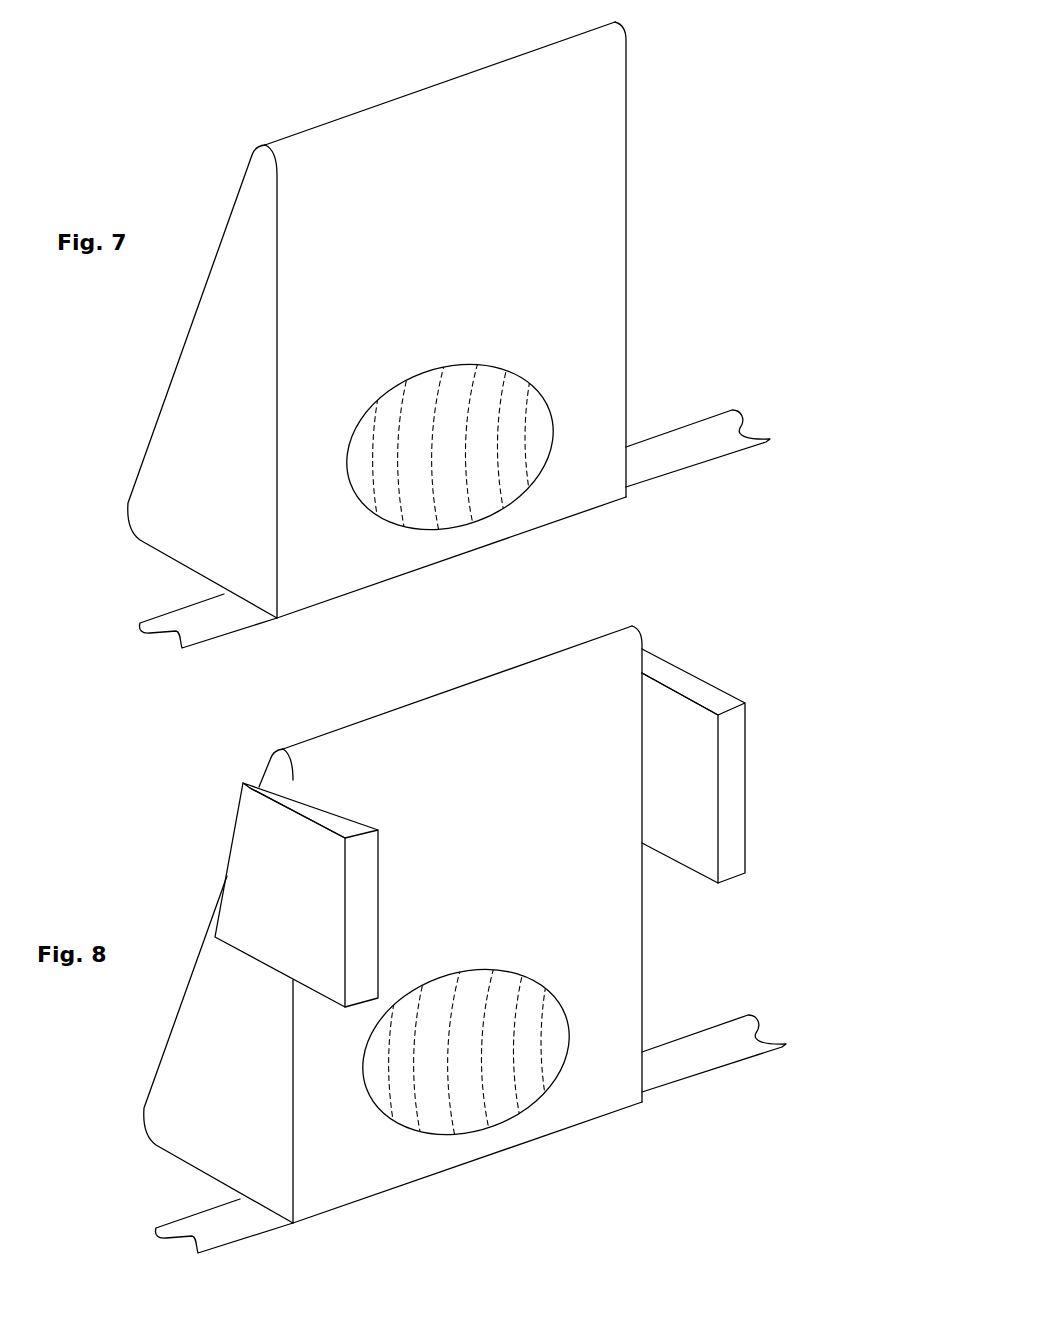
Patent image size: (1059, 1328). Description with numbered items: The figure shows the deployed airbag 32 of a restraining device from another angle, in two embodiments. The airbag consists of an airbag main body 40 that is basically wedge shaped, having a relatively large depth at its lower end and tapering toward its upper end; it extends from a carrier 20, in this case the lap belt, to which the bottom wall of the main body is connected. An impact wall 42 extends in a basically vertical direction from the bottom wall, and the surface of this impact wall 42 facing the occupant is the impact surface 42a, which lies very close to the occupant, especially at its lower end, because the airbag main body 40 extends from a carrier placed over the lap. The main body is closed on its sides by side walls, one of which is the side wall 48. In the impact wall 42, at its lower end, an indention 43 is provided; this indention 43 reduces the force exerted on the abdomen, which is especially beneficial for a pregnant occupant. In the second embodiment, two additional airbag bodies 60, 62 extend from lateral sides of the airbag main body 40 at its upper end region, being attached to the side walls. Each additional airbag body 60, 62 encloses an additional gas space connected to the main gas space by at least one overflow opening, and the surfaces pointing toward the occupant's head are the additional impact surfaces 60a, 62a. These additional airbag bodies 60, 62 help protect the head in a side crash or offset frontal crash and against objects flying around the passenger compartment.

In FIG. 7, the carrier 20 is at (712, 445).
In FIG. 8, the carrier 20 is at (728, 1047).
In FIG. 7, the airbag 32 is at (400, 90).
In FIG. 8, the airbag 32 is at (533, 698).
In FIG. 7, the airbag main body 40 is at (436, 330).
In FIG. 8, the airbag main body 40 is at (466, 908).
In FIG. 7, the impact wall 42 is at (560, 195).
In FIG. 8, the impact wall 42 is at (593, 868).
In FIG. 7, the impact surface 42a is at (562, 281).
In FIG. 8, the impact surface 42a is at (628, 988).
In FIG. 7, the indention 43 is at (472, 430).
In FIG. 8, the indention 43 is at (520, 1080).
In FIG. 7, the side wall 48 is at (207, 409).
In FIG. 8, the side wall 48 is at (218, 986).
In FIG. 8, the additional airbag body 60 is at (423, 742).
In FIG. 8, the additional impact surface 60a is at (676, 772).
In FIG. 8, the additional airbag body 62 is at (431, 895).
In FIG. 8, the additional impact surface 62a is at (392, 876).